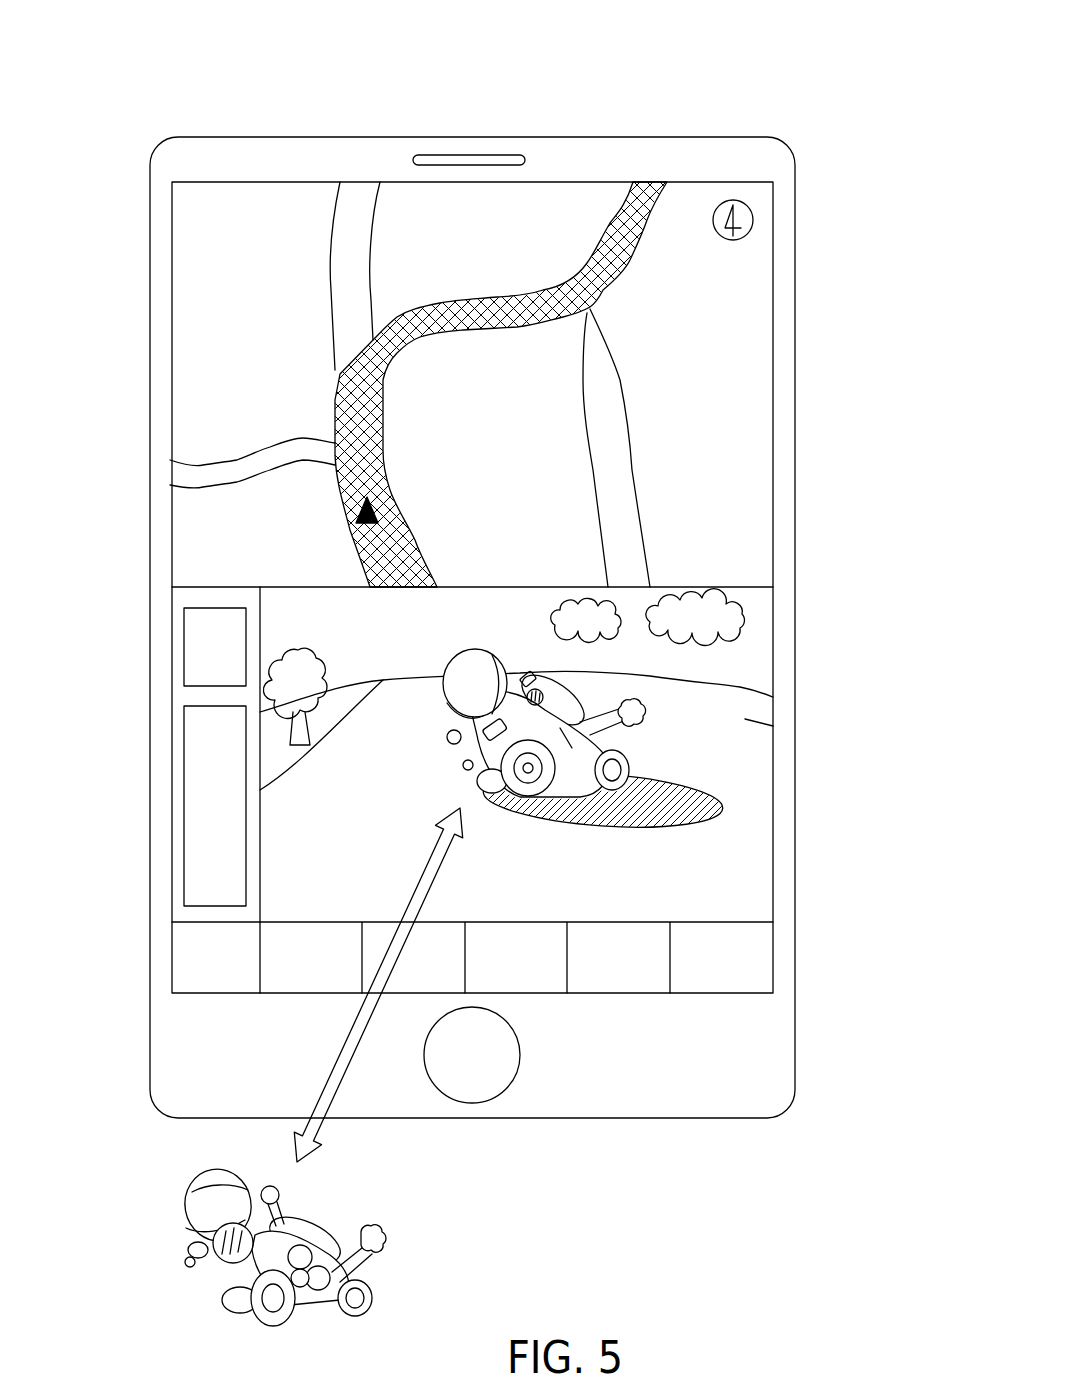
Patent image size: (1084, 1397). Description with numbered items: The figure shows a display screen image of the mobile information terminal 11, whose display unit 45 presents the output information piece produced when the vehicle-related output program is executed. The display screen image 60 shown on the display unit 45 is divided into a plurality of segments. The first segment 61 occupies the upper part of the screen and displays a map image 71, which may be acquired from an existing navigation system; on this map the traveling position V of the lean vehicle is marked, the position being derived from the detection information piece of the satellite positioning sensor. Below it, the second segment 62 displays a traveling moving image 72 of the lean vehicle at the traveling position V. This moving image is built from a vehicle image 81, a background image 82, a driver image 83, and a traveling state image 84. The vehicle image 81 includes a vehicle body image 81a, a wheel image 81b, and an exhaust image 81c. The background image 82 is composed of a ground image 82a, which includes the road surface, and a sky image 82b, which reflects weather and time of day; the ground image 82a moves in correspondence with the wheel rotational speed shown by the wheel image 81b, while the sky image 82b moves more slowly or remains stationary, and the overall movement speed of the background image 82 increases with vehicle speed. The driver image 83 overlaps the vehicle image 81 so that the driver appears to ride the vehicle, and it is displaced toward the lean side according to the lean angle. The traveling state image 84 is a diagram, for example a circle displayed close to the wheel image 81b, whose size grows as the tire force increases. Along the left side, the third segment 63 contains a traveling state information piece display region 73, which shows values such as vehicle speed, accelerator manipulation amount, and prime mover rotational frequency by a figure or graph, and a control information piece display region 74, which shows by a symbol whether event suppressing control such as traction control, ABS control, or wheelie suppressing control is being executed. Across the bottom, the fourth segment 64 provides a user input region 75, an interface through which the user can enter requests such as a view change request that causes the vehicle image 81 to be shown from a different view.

The mobile information terminal 11 is at (213, 128).
The display unit 45 is at (738, 178).
The display screen image 60 is at (162, 548).
The first segment 61 is at (193, 306).
The map image 71 is at (750, 314).
The traveling position V is at (382, 512).
The second segment 62 is at (762, 600).
The third segment 63 is at (175, 882).
The control information piece display region 74 is at (195, 645).
The traveling state information piece display region 73 is at (200, 795).
The fourth segment 64 is at (760, 950).
The user input region 75 is at (618, 972).
The traveling moving image 72 is at (755, 872).
The background image 82 is at (890, 643).
The ground image 82a is at (755, 720).
The sky image 82b is at (758, 657).
The vehicle image 81 is at (477, 750).
The vehicle body image 81a is at (548, 727).
The wheel image 81b is at (614, 795).
The exhaust image 81c is at (645, 710).
The driver image 83 is at (468, 653).
The traveling state image 84 is at (688, 774).